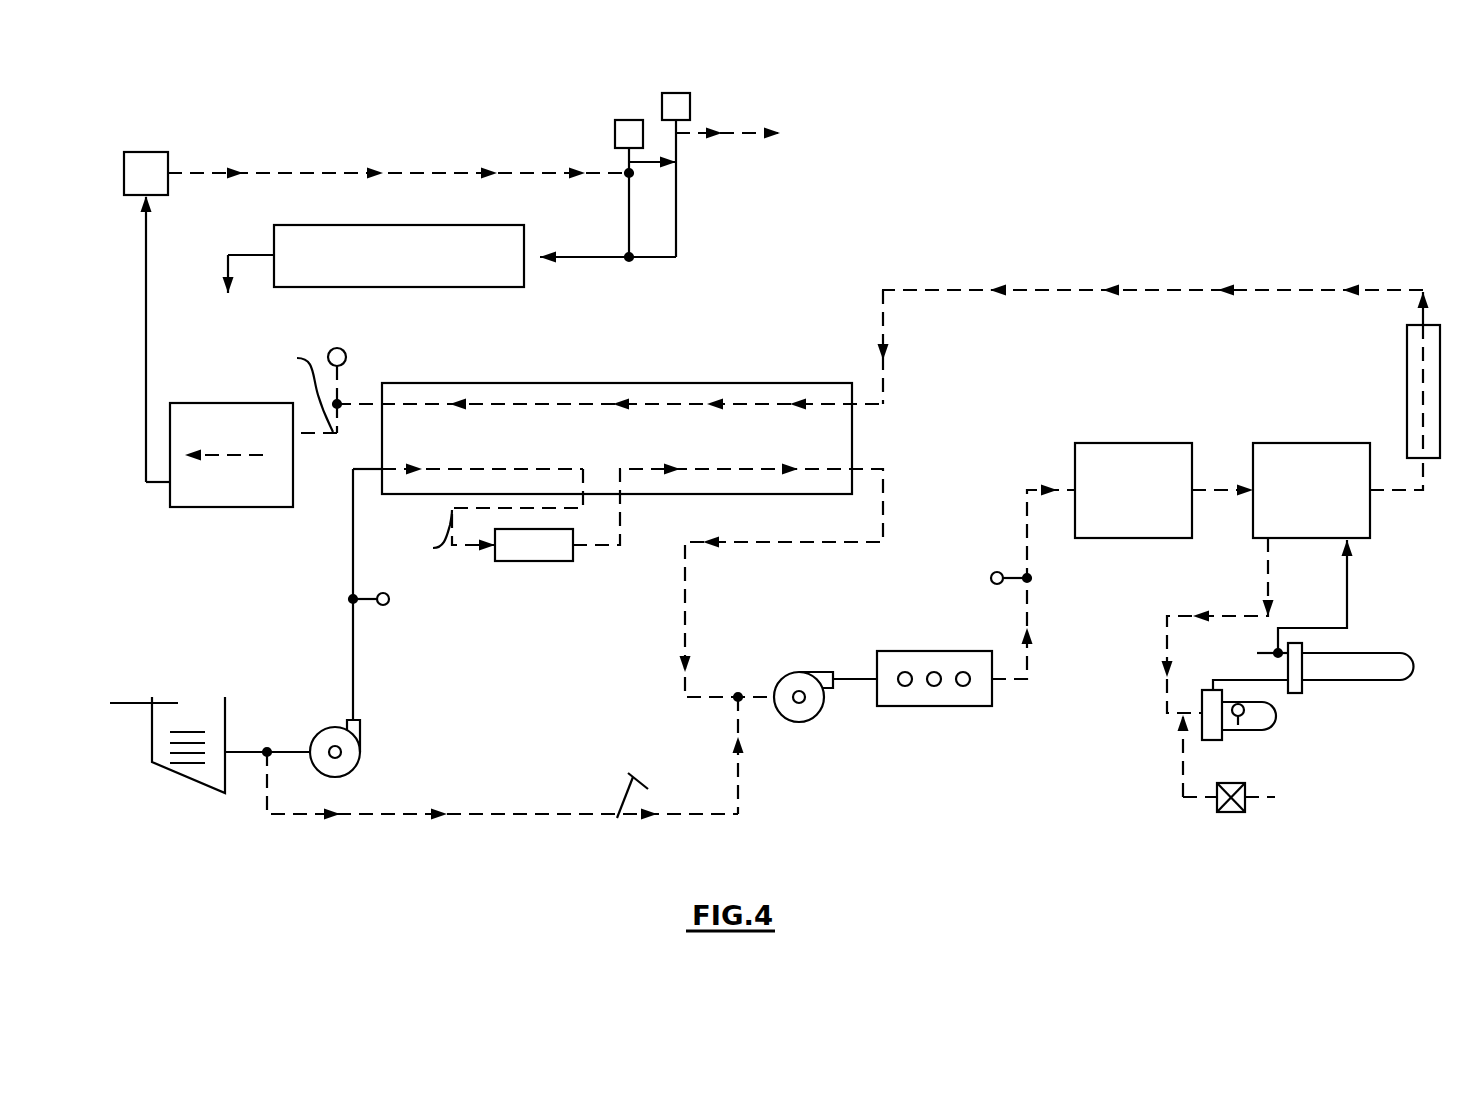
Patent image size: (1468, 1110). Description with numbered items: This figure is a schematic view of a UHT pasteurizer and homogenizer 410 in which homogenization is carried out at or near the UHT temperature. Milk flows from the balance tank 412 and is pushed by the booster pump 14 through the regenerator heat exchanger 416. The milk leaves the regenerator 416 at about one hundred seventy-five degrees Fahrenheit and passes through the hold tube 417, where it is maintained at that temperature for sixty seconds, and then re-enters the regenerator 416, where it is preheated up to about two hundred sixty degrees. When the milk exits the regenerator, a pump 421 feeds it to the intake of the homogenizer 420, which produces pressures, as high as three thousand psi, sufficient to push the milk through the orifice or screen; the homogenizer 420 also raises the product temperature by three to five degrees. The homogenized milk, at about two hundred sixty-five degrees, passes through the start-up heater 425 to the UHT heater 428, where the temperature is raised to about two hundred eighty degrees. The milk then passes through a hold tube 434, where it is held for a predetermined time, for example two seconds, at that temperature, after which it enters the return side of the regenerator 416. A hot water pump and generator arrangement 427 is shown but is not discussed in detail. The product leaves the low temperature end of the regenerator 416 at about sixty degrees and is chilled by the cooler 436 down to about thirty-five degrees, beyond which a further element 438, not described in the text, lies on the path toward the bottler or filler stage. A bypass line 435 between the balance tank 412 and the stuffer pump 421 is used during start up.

The pasteurizer and homogenizer 410 is at (770, 293).
The balance tank 412 is at (190, 782).
The pump 14 is at (360, 765).
The bypass line 435 is at (303, 814).
The regenerator heat exchanger 416 is at (626, 383).
The hold tube 417 is at (527, 561).
The homogenizer 420 is at (930, 706).
The pump 421 is at (805, 722).
The start-up heater 425 is at (1143, 443).
The hot water heater 428 is at (1320, 443).
The hold tube 434 is at (1407, 387).
The cooler 436 is at (237, 508).
The cooling section 438 is at (380, 288).
The hot water pump and generator arrangement 427 is at (1428, 666).